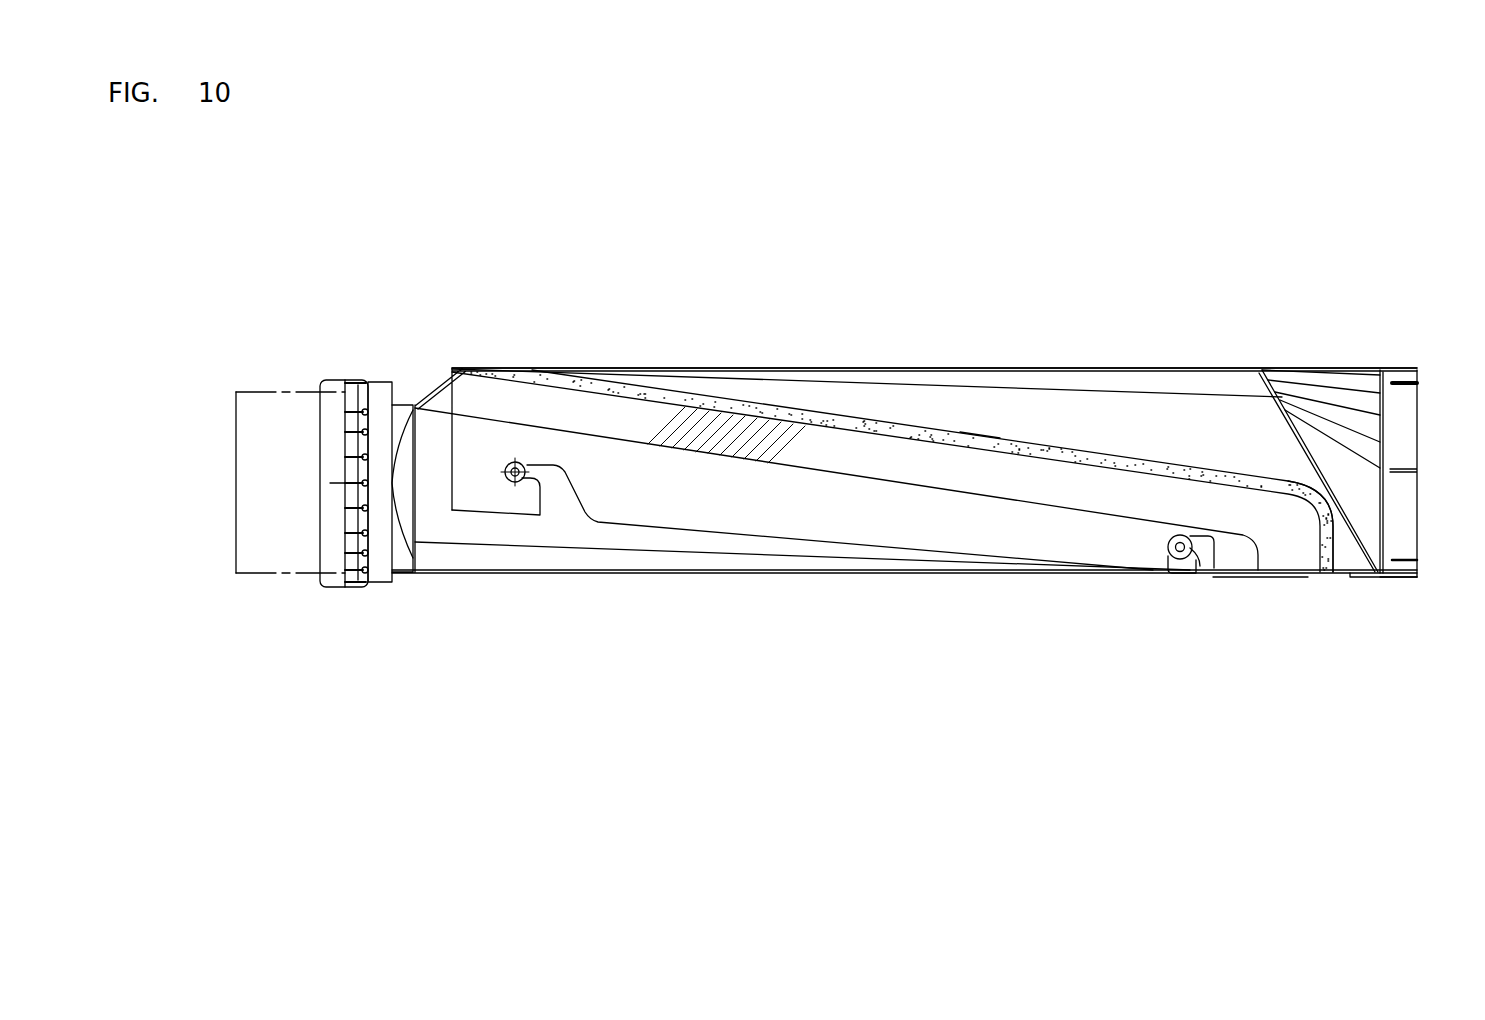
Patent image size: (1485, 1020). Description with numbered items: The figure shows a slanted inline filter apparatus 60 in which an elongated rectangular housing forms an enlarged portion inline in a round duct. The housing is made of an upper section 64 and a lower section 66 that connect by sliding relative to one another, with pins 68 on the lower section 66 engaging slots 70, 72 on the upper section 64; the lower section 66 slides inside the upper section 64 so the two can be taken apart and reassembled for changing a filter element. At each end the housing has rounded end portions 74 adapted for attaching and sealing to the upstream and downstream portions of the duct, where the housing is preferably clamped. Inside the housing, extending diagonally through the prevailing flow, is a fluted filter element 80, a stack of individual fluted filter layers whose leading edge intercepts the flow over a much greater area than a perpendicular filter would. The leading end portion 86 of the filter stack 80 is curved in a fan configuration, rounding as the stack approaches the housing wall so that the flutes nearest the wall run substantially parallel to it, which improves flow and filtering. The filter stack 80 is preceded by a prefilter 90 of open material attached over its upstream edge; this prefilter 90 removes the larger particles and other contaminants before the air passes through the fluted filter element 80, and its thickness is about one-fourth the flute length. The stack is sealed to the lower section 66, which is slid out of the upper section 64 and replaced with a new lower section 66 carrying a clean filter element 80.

The slanted inline filter apparatus 60 is at (811, 335).
The upper section 64 is at (625, 513).
The lower section 66 is at (447, 572).
The pins 68 is at (516, 462).
The slot 70 is at (578, 502).
The slot 72 is at (1205, 562).
The rounded end portions 74 is at (370, 388).
The filter element 80 is at (1077, 465).
The leading end portion 86 is at (1308, 520).
The prefilter 90 is at (993, 437).